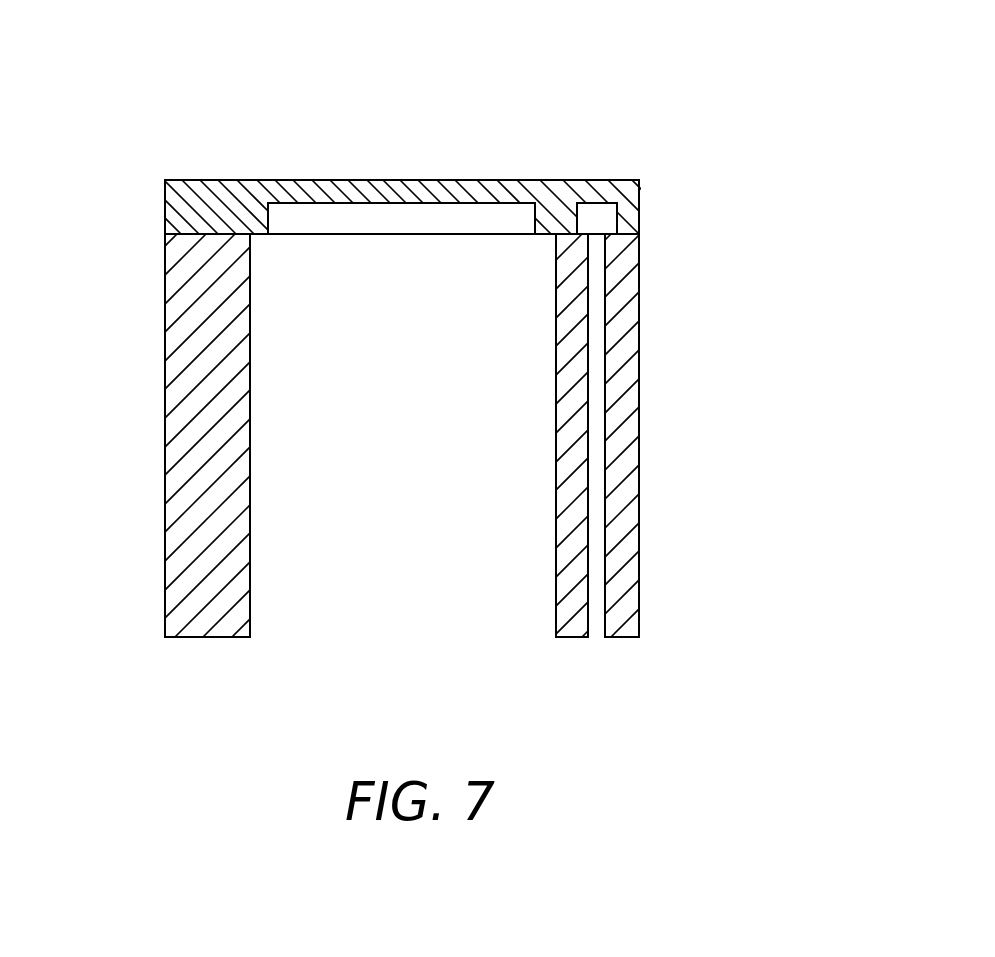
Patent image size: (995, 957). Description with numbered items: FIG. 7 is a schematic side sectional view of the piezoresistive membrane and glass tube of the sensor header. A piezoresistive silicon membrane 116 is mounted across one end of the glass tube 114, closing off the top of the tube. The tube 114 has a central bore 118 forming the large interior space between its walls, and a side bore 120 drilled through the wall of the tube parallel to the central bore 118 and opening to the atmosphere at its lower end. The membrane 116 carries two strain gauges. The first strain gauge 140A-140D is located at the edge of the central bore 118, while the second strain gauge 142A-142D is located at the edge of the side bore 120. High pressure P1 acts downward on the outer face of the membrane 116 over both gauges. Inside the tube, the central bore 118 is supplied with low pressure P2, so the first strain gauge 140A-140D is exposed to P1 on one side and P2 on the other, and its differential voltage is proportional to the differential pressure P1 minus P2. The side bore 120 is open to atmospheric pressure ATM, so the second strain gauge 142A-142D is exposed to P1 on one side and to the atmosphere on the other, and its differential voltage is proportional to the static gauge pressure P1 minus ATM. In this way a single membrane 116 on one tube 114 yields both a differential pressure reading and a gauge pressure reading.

The glass tube 114 is at (165, 545).
The piezoresistive silicon membrane 116 is at (368, 180).
The central bore 118 is at (375, 496).
The side bore 120 is at (607, 395).
The first strain gauge 140A-140D is at (455, 180).
The second strain gauge 142A-142D is at (608, 180).
The high pressure P1 is at (262, 147).
The low pressure P2 is at (372, 293).
The atmospheric pressure ATM is at (597, 622).